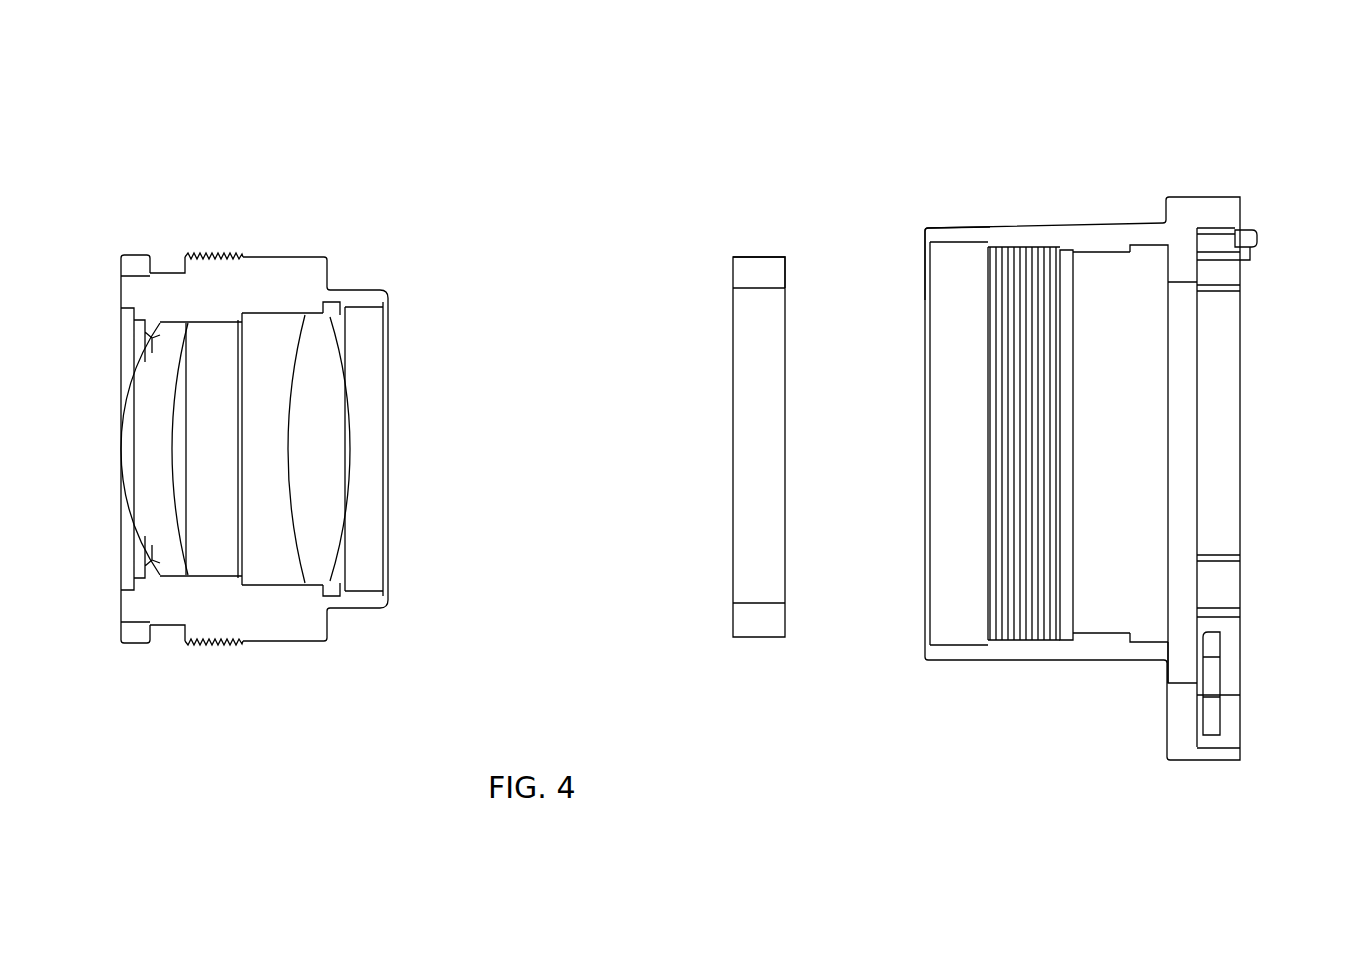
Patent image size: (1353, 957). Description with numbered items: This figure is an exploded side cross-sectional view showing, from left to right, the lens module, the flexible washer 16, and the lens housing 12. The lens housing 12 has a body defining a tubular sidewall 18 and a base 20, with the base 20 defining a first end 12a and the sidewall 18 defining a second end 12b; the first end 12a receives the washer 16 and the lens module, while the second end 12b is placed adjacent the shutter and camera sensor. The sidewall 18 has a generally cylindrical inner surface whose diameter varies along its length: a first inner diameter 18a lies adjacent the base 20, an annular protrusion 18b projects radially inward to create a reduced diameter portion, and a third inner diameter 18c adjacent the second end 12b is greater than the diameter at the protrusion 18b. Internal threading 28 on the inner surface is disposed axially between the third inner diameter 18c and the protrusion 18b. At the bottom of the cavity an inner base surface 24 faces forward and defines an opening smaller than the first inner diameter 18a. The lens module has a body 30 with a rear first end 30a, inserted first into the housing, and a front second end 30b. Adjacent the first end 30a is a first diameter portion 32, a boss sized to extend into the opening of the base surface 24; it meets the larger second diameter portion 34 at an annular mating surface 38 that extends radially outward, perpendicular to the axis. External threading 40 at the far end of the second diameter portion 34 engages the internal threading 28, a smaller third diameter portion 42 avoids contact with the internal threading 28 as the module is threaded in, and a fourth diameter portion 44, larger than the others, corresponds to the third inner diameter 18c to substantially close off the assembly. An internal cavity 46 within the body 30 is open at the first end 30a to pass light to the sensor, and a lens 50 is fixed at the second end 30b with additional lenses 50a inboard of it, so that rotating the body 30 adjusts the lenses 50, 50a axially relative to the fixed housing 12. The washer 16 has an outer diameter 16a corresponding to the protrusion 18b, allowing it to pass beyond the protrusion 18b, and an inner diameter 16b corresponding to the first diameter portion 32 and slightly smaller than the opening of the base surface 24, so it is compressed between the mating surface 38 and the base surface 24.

The lens housing 12 is at (1139, 79).
The first end 12a is at (1279, 193).
The second end 12b is at (945, 210).
The flexible washer 16 is at (755, 257).
The outer diameter 16a is at (771, 257).
The inner diameter 16b is at (750, 289).
The tubular sidewall 18 is at (1045, 228).
The first inner diameter 18a is at (1150, 642).
The annular protrusion 18b is at (1093, 252).
The third inner diameter 18c is at (972, 610).
The base 20 is at (1192, 210).
The inner base surface 24 is at (1152, 628).
The internal threading 28 is at (1035, 642).
The body 30 is at (298, 623).
The rear first end 30a is at (388, 296).
The front second end 30b is at (121, 303).
The first diameter portion 32 is at (377, 598).
The second diameter portion 34 is at (283, 262).
The annular mating surface 38 is at (328, 270).
The external threading 40 is at (208, 252).
The third diameter portion 42 is at (169, 268).
The fourth diameter portion 44 is at (138, 253).
The internal cavity 46 is at (217, 493).
The lens 50 is at (153, 483).
The additional lenses 50a is at (330, 518).